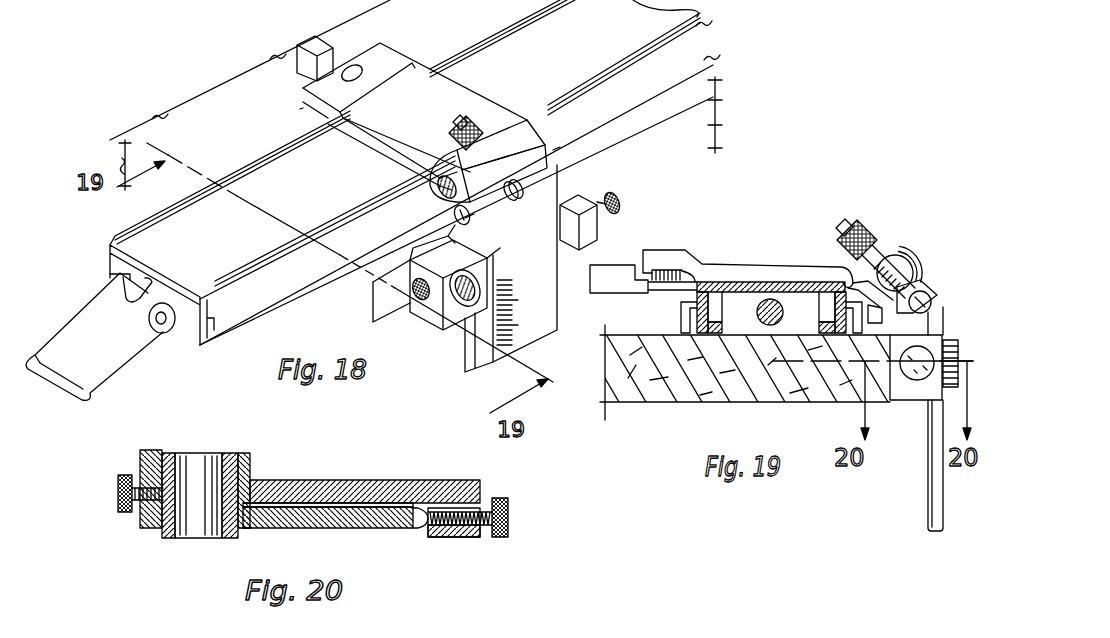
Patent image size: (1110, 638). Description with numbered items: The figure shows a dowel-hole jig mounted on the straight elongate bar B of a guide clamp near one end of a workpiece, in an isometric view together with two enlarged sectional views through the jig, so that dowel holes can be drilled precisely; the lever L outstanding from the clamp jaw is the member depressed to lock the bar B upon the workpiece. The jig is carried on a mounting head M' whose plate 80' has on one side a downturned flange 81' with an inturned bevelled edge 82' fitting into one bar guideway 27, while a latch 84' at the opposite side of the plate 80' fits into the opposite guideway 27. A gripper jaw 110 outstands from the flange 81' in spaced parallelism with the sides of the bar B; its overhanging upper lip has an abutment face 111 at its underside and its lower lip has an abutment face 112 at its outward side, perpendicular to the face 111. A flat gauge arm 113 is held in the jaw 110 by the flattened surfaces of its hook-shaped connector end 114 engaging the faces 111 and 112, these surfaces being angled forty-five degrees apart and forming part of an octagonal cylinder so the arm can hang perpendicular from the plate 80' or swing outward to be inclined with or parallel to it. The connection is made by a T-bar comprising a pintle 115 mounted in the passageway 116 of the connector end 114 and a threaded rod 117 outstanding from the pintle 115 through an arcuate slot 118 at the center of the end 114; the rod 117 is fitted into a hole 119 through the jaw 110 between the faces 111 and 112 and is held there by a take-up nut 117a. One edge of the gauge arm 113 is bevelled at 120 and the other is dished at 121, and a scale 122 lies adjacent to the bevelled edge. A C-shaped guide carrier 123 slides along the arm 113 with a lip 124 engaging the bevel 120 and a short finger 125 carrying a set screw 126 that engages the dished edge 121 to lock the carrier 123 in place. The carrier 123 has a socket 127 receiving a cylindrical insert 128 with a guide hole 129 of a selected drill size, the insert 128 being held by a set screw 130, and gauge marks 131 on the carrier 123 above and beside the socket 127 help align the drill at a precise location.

In FIG. 18, the notched guideway 27 is at (347, 217).
In FIG. 19, the notched guideway 27 is at (712, 300).
In FIG. 18, the plate 80' is at (415, 114).
In FIG. 19, the plate 80' is at (748, 266).
In FIG. 18, the downturned flange 81' is at (422, 157).
In FIG. 19, the downturned flange 81' is at (837, 275).
In FIG. 18, the inturned bevelled edge 82' is at (391, 154).
In FIG. 18, the latch 84' is at (331, 52).
In FIG. 19, the latch 84' is at (643, 262).
In FIG. 18, the gripper jaw 110 is at (545, 120).
In FIG. 19, the gripper jaw 110 is at (890, 262).
In FIG. 19, the abutment face 111 is at (922, 258).
In FIG. 19, the abutment face 112 is at (892, 315).
In FIG. 18, the gauge arm 113 is at (537, 333).
In FIG. 19, the gauge arm 113 is at (928, 483).
In FIG. 20, the gauge arm 113 is at (347, 528).
In FIG. 18, the hook-shaped connector end 114 is at (557, 160).
In FIG. 18, the pintle 115 is at (465, 220).
In FIG. 19, the pintle 115 is at (926, 300).
In FIG. 18, the passageway 116 is at (483, 217).
In FIG. 19, the passageway 116 is at (931, 290).
In FIG. 18, the threaded rod 117 is at (458, 118).
In FIG. 19, the threaded rod 117 is at (841, 224).
In FIG. 18, the take-up nut 117a is at (470, 120).
In FIG. 19, the take-up nut 117a is at (850, 224).
In FIG. 18, the arcuate slot 118 is at (553, 183).
In FIG. 19, the hole 119 is at (893, 252).
In FIG. 18, the bevelled edge 120 is at (487, 365).
In FIG. 19, the bevelled edge 120 is at (936, 506).
In FIG. 20, the bevelled edge 120 is at (267, 513).
In FIG. 20, the dished edge 121 is at (413, 528).
In FIG. 18, the scale 122 is at (513, 292).
In FIG. 19, the C-shaped guide carrier 123 is at (920, 388).
In FIG. 20, the C-shaped guide carrier 123 is at (360, 482).
In FIG. 20, the lip 124 is at (245, 527).
In FIG. 18, the short finger 125 is at (595, 223).
In FIG. 20, the short finger 125 is at (470, 537).
In FIG. 18, the set screw 126 is at (617, 199).
In FIG. 20, the set screw 126 is at (512, 510).
In FIG. 18, the socket 127 is at (438, 305).
In FIG. 20, the socket 127 is at (247, 467).
In FIG. 18, the cylindrical insert 128 is at (463, 302).
In FIG. 19, the cylindrical insert 128 is at (952, 355).
In FIG. 20, the cylindrical insert 128 is at (165, 453).
In FIG. 20, the guide hole 129 is at (203, 461).
In FIG. 18, the set screw 130 is at (413, 302).
In FIG. 19, the set screw 130 is at (900, 367).
In FIG. 20, the set screw 130 is at (118, 492).
In FIG. 18, the gauge marks 131 is at (420, 252).
In FIG. 18, the lever L is at (76, 323).
In FIG. 18, the mounting head M' is at (272, 113).
In FIG. 19, the bar B is at (723, 282).